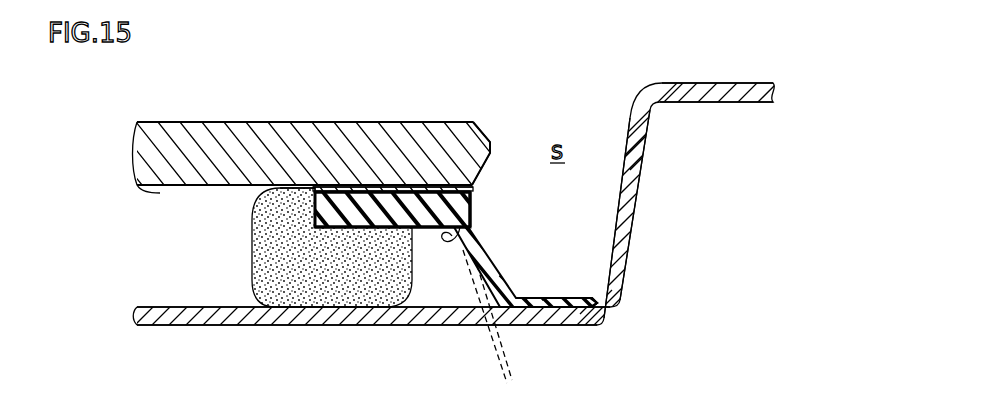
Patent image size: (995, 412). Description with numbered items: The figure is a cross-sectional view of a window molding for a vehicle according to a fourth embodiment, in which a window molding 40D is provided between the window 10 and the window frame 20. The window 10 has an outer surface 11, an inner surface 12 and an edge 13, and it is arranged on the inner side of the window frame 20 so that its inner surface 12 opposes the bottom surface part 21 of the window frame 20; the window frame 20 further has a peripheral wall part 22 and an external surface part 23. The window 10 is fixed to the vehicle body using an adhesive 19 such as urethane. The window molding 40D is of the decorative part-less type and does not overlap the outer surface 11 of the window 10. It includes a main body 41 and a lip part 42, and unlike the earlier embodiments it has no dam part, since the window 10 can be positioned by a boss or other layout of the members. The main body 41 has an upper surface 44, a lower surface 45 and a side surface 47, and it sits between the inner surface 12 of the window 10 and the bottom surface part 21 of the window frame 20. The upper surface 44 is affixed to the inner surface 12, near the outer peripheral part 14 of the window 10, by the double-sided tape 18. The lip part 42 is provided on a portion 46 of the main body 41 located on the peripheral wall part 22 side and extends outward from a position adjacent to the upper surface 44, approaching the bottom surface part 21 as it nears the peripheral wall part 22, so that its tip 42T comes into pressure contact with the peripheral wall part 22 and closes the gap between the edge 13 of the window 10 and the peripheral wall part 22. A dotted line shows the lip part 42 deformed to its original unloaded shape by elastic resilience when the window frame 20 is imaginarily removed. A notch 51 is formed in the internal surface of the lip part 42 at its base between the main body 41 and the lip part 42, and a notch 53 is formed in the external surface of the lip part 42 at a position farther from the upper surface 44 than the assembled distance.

The window 10 is at (137, 155).
The outer surface 11 is at (157, 122).
The inner surface 12 is at (136, 186).
The edge 13 is at (494, 148).
The outer peripheral part 14 is at (440, 189).
The double-sided tape 18 is at (410, 232).
The adhesive 19 is at (310, 283).
The window frame 20 is at (720, 84).
The bottom surface part 21 is at (240, 323).
The peripheral wall part 22 is at (632, 200).
The external surface part 23 is at (686, 83).
The window molding 40D is at (450, 294).
The main body 41 is at (437, 222).
The lip part 42 is at (474, 270).
The tip of lead portion 42T is at (597, 308).
The upper surface 44 is at (350, 190).
The lower surface 45 is at (380, 188).
The portion 46 is at (463, 205).
The side surface 47 is at (310, 205).
The notch 51 is at (470, 240).
The notch 53 is at (508, 288).